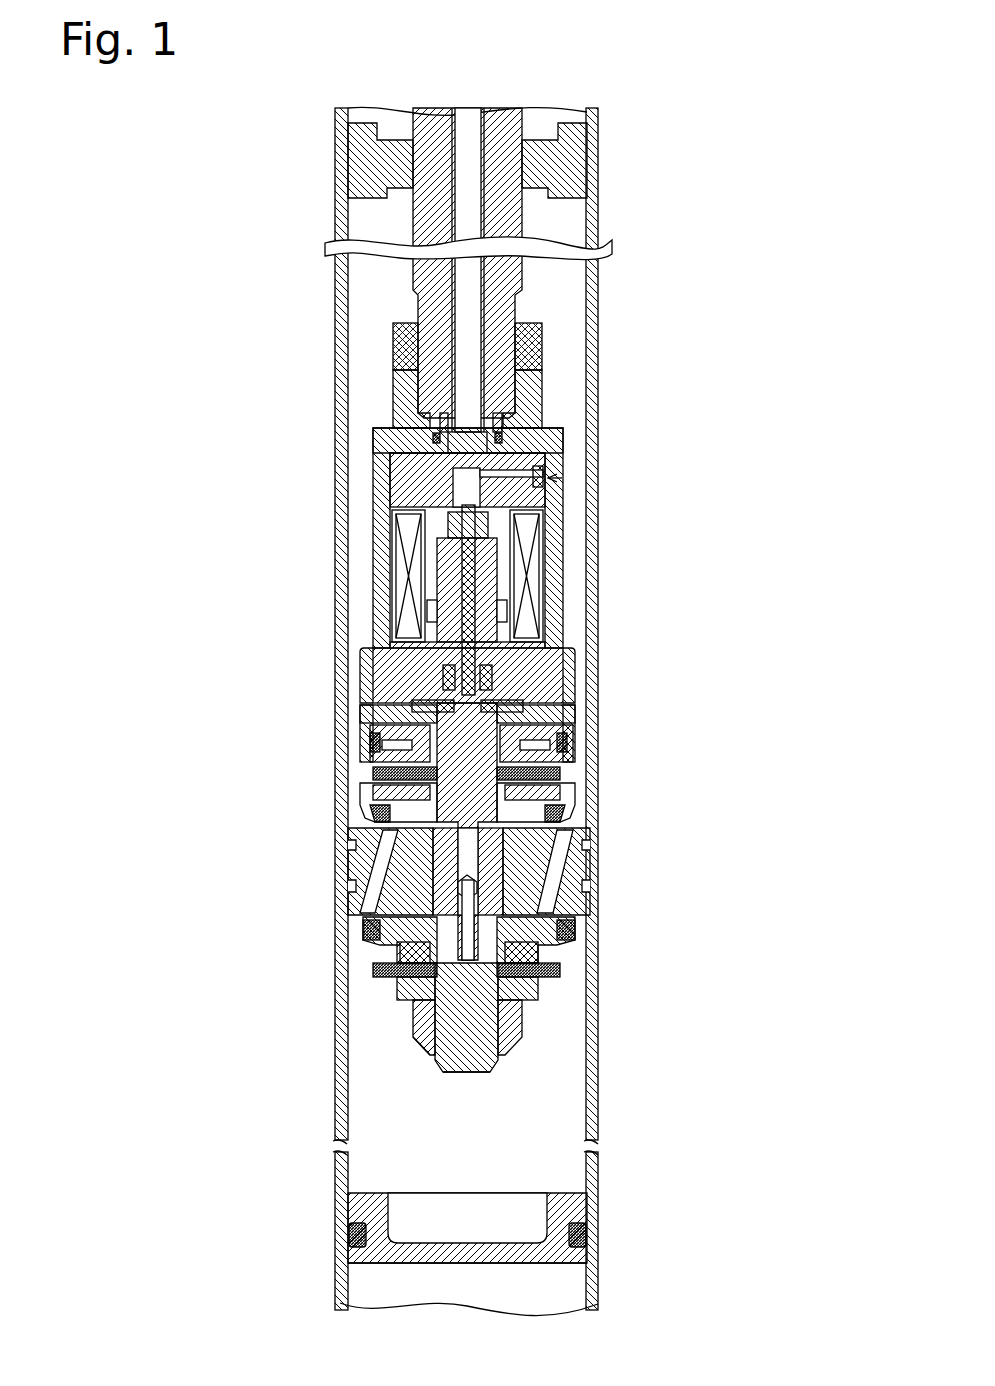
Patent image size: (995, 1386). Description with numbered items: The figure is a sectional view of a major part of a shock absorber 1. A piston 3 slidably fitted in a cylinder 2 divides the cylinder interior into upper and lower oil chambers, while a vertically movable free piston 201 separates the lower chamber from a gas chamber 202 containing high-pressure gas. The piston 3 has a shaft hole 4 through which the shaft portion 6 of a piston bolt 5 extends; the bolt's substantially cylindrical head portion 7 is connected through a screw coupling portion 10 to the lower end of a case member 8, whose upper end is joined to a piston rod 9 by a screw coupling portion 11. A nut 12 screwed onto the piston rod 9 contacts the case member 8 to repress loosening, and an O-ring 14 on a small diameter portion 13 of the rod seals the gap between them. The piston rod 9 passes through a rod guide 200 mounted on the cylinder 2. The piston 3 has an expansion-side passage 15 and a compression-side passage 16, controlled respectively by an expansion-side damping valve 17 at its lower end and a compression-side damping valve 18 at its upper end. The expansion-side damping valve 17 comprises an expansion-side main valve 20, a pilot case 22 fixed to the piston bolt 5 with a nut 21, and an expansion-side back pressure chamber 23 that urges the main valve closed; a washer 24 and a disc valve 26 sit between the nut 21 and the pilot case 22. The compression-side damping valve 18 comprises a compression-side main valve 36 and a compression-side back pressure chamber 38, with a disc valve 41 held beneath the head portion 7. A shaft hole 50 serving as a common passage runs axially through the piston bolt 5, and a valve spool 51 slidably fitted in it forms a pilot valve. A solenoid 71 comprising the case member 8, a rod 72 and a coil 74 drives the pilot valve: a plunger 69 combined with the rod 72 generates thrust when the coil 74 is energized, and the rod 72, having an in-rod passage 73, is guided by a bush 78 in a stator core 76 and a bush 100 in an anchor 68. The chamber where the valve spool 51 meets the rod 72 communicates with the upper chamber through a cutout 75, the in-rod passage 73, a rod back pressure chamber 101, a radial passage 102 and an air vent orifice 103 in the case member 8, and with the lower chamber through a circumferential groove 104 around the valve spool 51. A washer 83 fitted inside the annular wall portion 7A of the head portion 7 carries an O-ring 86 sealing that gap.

The shock absorber 1 is at (767, 146).
The cylinder 2 is at (600, 287).
The piston 3 is at (345, 873).
The shaft hole 4 is at (500, 892).
The piston bolt 5 is at (492, 1072).
The shaft portion 6 is at (469, 1072).
The head portion 7 is at (500, 712).
The annular wall portion 7A is at (575, 710).
The case member 8 is at (372, 481).
The piston rod 9 is at (430, 272).
The screw coupling portion 10 is at (575, 664).
The screw coupling portion 11 is at (600, 366).
The nut 12 is at (600, 322).
The small diameter portion 13 is at (500, 430).
The O-ring 14 is at (440, 425).
The expansion-side passage 15 is at (588, 884).
The compression-side passage 16 is at (352, 884).
The expansion-side damping valve 17 is at (385, 960).
The compression-side damping valve 18 is at (578, 785).
The expansion-side main valve 20 is at (576, 920).
The nut 21 is at (420, 1055).
The pilot case 22 is at (540, 950).
The expansion-side back pressure chamber 23 is at (578, 930).
The washer 24 is at (415, 1005).
The disc valve 26 is at (400, 983).
The compression-side main valve 36 is at (565, 812).
The compression-side back pressure chamber 38 is at (380, 795).
The disc valve 41 is at (375, 772).
The shaft hole 50 is at (457, 1068).
The valve spool 51 is at (460, 888).
The anchor 68 is at (362, 652).
The plunger 69 is at (490, 575).
The solenoid 71 is at (465, 555).
The rod 72 is at (398, 552).
The in-rod passage 73 is at (455, 578).
The coil 74 is at (538, 580).
The cutout 75 is at (418, 705).
The stator core 76 is at (376, 464).
The bush 78 is at (407, 507).
The washer 83 is at (572, 750).
The O-ring 86 is at (565, 735).
The bush 100 is at (445, 670).
The rod back pressure chamber 101 is at (512, 475).
The passage 102 is at (538, 470).
The air vent orifice 103 is at (563, 478).
The circumferential groove 104 is at (375, 730).
The rod guide 200 is at (600, 150).
The free piston 201 is at (572, 1208).
The gas chamber 202 is at (565, 1292).